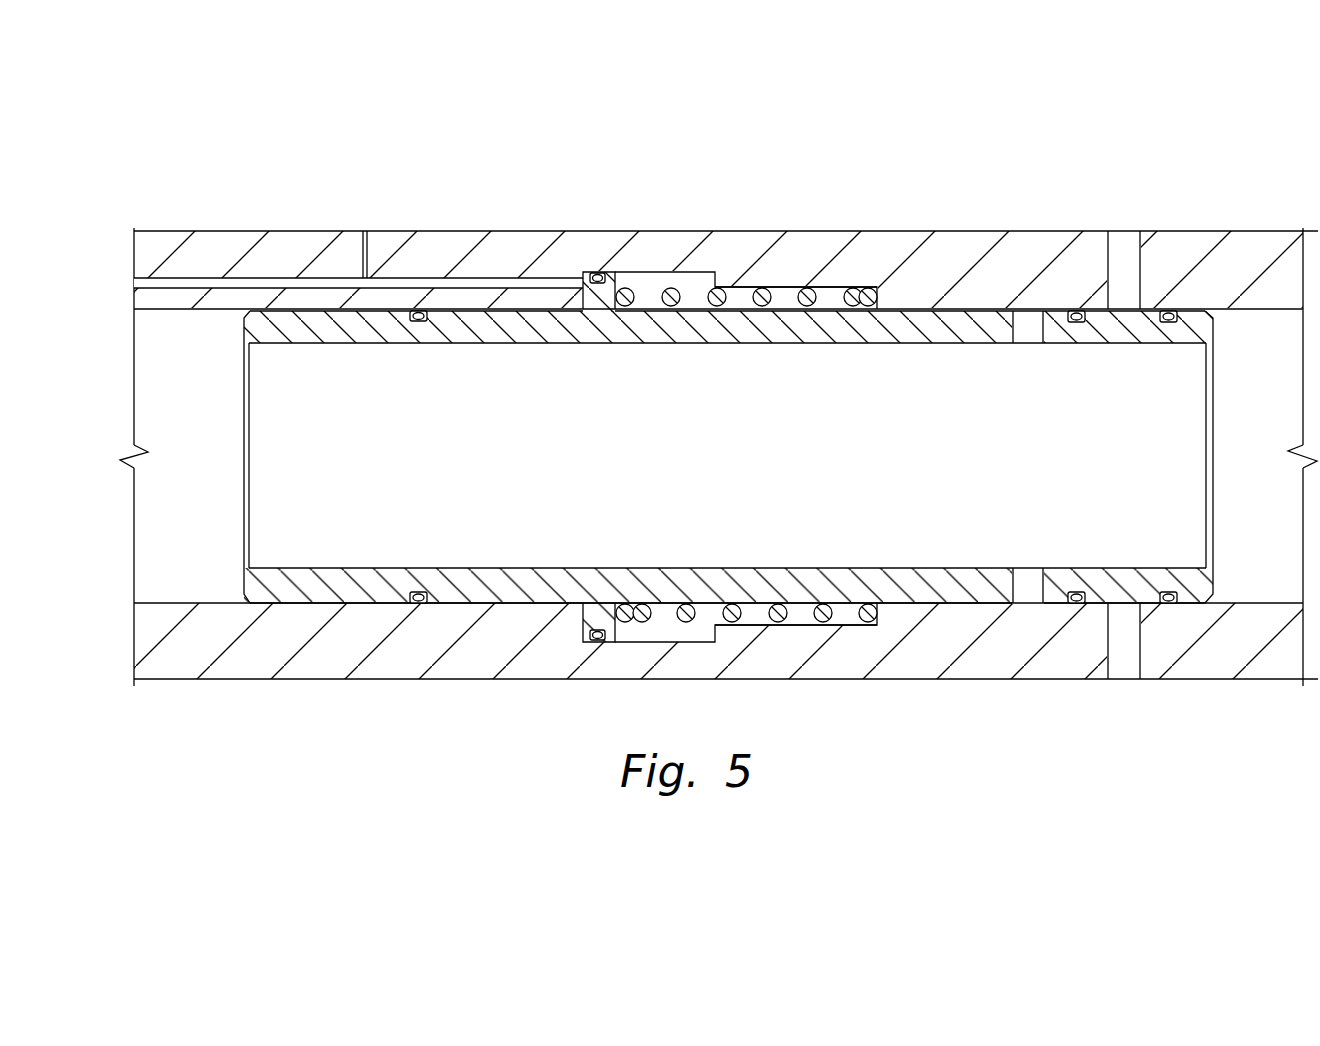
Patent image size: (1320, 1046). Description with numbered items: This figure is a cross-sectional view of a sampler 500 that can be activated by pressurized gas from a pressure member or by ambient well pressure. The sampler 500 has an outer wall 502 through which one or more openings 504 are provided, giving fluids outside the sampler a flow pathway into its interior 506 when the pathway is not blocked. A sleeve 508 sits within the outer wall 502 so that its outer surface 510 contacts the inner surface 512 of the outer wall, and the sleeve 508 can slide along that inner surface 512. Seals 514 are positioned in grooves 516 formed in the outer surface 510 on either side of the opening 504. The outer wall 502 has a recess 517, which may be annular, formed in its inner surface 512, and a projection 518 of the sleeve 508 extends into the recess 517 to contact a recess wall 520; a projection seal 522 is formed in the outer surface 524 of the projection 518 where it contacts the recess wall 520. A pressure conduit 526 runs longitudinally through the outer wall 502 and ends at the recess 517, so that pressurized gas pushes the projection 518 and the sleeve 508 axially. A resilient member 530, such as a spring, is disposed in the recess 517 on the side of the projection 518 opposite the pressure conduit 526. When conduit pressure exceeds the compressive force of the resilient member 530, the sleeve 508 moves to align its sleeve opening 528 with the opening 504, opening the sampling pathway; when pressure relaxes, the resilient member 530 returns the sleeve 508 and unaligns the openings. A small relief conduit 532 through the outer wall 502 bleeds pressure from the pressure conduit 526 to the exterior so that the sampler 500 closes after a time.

The sampler 500 is at (1210, 119).
The outer wall 502 is at (316, 230).
The openings 504 is at (1124, 250).
The interior 506 is at (752, 476).
The sleeve 508 is at (506, 343).
The outer surface 510 is at (240, 325).
The inner surface 512 is at (1250, 309).
The seals 514 is at (1077, 310).
The grooves 516 is at (1081, 322).
The recess 517 is at (652, 284).
The projection 518 is at (593, 618).
The recess wall 520 is at (695, 280).
The projection seal 522 is at (596, 272).
The outer surface of the projection 524 is at (605, 286).
The pressure conduit 526 is at (425, 288).
The sleeve opening 528 is at (1027, 330).
The resilient member 530 is at (672, 296).
The relief conduit 532 is at (366, 230).